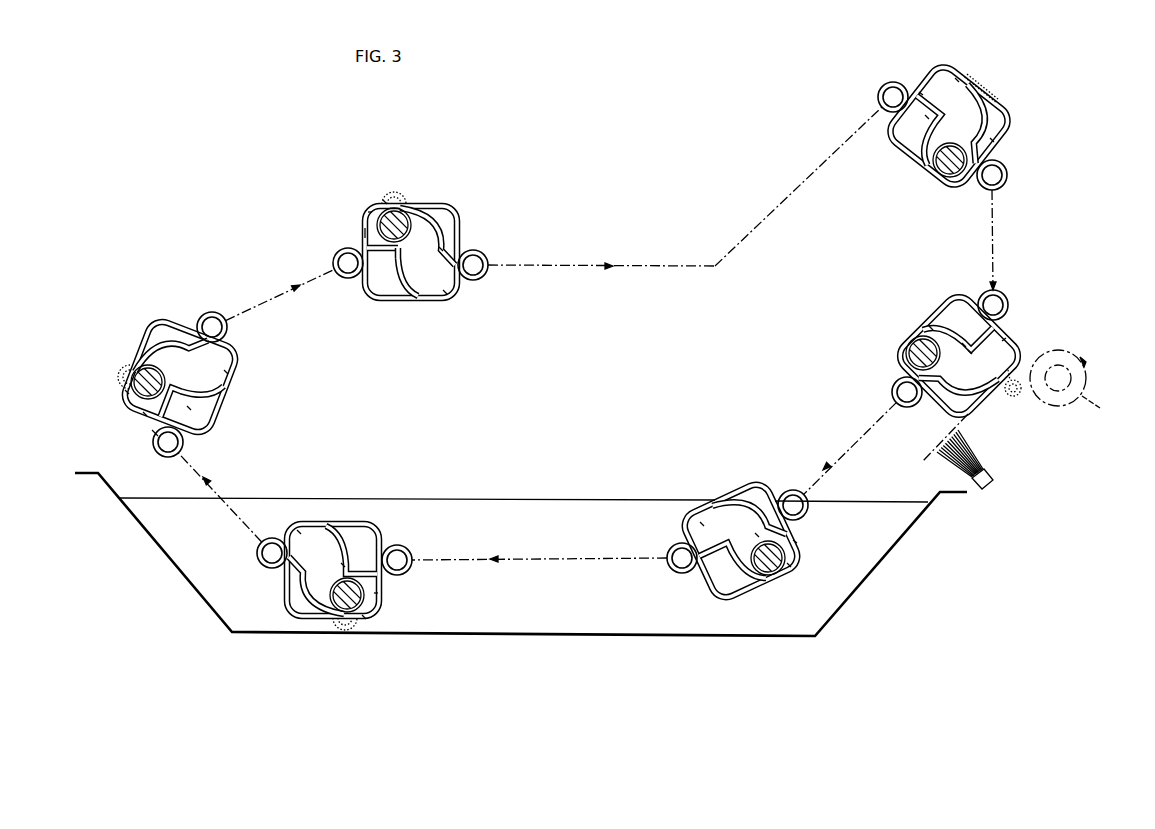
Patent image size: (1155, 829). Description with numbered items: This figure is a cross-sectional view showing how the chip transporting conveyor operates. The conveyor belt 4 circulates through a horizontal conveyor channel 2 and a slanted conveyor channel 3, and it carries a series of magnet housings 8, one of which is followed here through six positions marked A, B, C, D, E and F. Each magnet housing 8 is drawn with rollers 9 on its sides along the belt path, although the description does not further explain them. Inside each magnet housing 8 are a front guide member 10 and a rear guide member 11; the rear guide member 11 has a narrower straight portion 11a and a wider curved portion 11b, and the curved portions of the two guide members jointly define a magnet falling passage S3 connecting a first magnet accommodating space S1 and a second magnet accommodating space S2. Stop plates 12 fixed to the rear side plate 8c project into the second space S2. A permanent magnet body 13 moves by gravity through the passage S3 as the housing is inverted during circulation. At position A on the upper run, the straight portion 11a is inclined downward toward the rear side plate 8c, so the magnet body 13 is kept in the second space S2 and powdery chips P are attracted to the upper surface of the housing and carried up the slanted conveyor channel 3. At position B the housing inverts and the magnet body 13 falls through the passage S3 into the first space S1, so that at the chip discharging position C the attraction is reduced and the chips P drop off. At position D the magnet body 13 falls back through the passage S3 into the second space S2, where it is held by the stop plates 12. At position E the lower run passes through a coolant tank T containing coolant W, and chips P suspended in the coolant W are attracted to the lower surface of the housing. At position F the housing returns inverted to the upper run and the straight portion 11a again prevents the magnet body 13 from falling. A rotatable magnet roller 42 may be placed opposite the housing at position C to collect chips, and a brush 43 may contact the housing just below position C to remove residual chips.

The horizontal conveyor channel 2 is at (558, 258).
The slanted conveyor channel 3 is at (800, 182).
The conveyor belt 4 is at (641, 264).
The magnet housing 8 is at (455, 208).
The rear side plate 8c is at (364, 233).
The guide rollers 9 is at (336, 258).
The front guide member 10 is at (979, 110).
The rear guide member 11 is at (405, 275).
The straight portion 11a is at (384, 257).
The curved portion 11b is at (398, 283).
The stop plates 12 is at (368, 214).
The permanent magnet body 13 is at (404, 224).
The rotatable magnet roller 42 is at (1058, 350).
The brush 43 is at (990, 470).
The powdery chips P is at (397, 198).
The first magnet accommodating space S1 is at (447, 291).
The second magnet accommodating space S2 is at (385, 200).
The magnet falling passage S3 is at (440, 249).
The coolant tank T is at (537, 636).
The coolant W is at (512, 497).
The position A is at (426, 193).
The position B is at (943, 62).
The chip discharging position C is at (1017, 302).
The position D is at (728, 483).
The position E is at (322, 514).
The position F is at (173, 320).